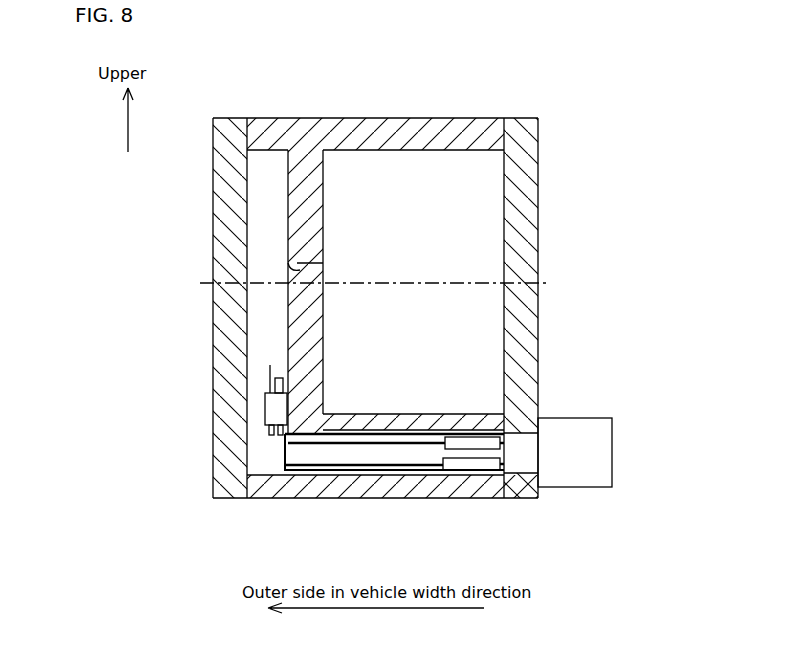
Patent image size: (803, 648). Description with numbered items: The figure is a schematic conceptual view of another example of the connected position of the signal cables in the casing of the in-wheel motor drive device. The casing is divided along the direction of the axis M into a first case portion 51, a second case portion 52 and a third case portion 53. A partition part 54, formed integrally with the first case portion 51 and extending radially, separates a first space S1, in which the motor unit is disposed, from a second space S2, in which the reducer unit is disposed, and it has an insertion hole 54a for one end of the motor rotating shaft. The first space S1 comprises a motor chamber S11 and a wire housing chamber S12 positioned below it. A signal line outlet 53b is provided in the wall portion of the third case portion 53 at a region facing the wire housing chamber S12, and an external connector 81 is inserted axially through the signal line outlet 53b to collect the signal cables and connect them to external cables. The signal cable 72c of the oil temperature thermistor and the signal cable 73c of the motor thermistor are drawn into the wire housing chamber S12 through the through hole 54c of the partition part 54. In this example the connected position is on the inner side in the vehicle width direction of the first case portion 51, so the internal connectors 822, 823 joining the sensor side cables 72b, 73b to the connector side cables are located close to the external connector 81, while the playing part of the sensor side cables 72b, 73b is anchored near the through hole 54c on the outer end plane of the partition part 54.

The first case portion 51 is at (384, 118).
The second case portion 52 is at (213, 180).
The third case portion 53 is at (539, 194).
The signal line outlet 53b is at (529, 438).
The partition part 54 is at (298, 232).
The insertion hole 54a is at (292, 269).
The through hole 54c is at (285, 441).
The sensor side cable 72b is at (393, 498).
The signal cable 72c is at (301, 470).
The sensor side cable 73b is at (394, 498).
The signal cable 73c is at (360, 452).
The external connector 81 is at (605, 419).
The internal connector 822 is at (478, 466).
The internal connector 823 is at (446, 447).
The first space S1 is at (432, 172).
The second space S2 is at (270, 172).
The motor chamber S11 is at (478, 233).
The wire housing chamber S12 is at (407, 478).
The axis M is at (384, 285).